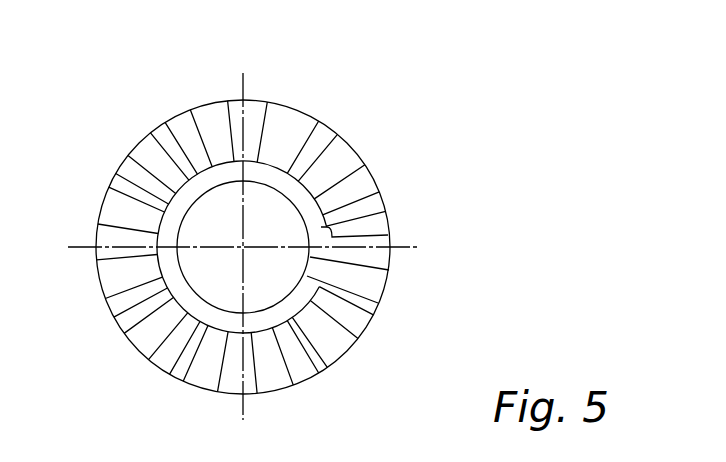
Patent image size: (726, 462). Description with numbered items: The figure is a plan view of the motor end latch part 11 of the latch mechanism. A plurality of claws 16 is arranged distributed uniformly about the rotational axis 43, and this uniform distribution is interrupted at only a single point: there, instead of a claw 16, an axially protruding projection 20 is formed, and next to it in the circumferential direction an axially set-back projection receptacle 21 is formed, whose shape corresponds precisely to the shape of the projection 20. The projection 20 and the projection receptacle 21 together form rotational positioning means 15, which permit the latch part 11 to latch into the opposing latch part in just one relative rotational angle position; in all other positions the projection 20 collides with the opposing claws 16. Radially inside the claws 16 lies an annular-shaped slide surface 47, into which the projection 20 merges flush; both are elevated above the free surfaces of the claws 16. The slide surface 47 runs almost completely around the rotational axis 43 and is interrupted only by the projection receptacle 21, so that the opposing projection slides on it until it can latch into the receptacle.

The latch part 11 is at (383, 160).
The rotational positioning means 15 is at (402, 283).
The claws 16 is at (237, 110).
The projection 20 is at (368, 288).
The projection receptacle 21 is at (373, 254).
The rotational axis 43 is at (243, 246).
The slide surface 47 is at (372, 216).